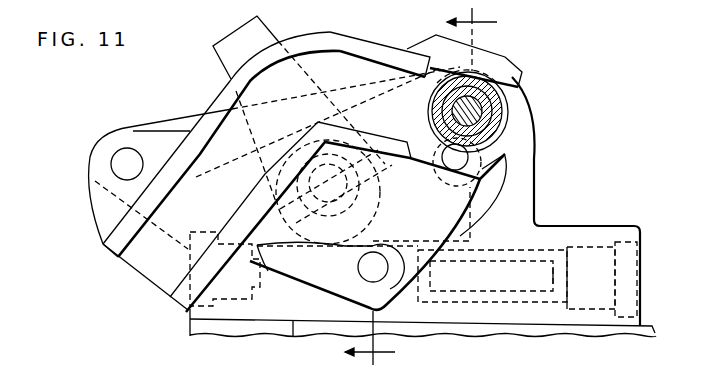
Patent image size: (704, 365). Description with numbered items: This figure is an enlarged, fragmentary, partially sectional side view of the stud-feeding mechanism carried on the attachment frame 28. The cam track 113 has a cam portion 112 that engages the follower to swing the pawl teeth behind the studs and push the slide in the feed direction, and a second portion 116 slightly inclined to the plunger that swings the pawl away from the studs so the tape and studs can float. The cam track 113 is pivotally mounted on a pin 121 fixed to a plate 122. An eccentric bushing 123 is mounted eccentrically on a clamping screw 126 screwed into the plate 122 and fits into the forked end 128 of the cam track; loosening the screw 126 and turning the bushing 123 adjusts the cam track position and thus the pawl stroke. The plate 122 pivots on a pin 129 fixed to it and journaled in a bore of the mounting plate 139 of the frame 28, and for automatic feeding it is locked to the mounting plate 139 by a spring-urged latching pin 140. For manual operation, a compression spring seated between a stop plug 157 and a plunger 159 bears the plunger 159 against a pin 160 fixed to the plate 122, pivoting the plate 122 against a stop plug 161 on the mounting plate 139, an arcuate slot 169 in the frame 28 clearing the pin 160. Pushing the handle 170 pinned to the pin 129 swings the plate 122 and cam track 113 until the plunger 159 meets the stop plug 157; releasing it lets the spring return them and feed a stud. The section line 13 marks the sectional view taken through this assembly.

The section line 13- 13 is at (422, 186).
The attachment frame 28 is at (189, 335).
The cam portion 112 is at (192, 164).
The cam track 113 is at (349, 40).
The second portion of the cam track 116 is at (362, 138).
The pin 121 is at (112, 167).
The plate 122 is at (452, 222).
The eccentric bushing 123 is at (496, 110).
The clamping screw 126 is at (500, 82).
The forked end 128 is at (506, 62).
The pin 129 is at (360, 216).
The mounting plate 139 is at (526, 164).
The latching pin 140 is at (452, 178).
The stop plug 157 is at (598, 302).
The plunger 159 is at (530, 274).
The pin 160 is at (358, 270).
The stop plug 161 is at (230, 307).
The arcuate slot 169 is at (288, 288).
The handle 170 is at (222, 44).